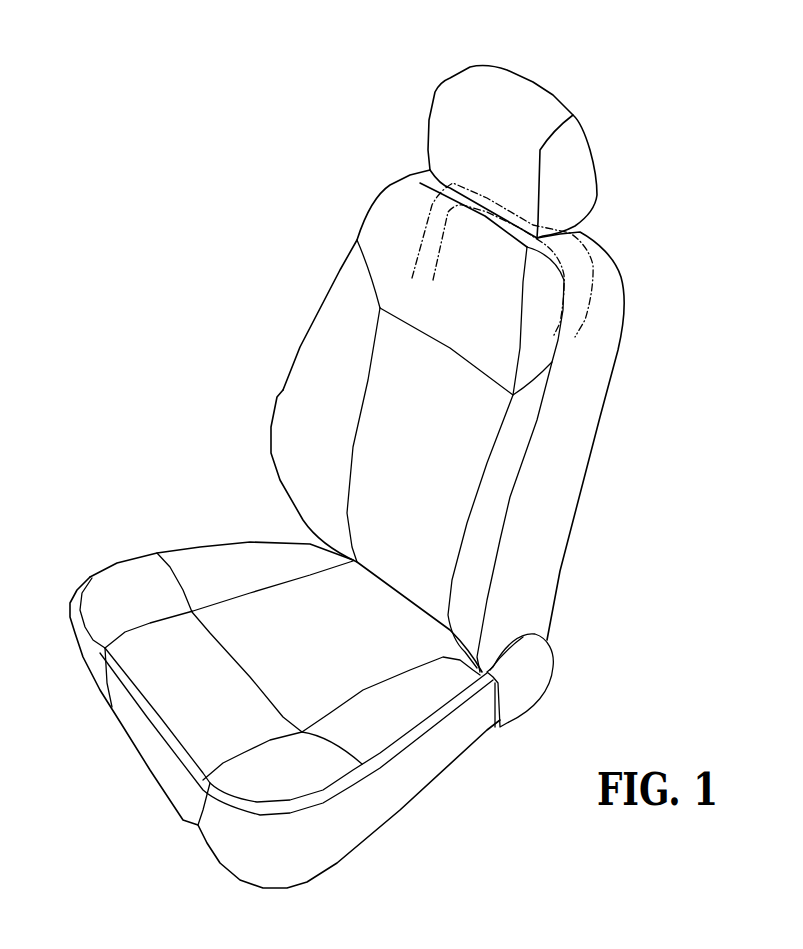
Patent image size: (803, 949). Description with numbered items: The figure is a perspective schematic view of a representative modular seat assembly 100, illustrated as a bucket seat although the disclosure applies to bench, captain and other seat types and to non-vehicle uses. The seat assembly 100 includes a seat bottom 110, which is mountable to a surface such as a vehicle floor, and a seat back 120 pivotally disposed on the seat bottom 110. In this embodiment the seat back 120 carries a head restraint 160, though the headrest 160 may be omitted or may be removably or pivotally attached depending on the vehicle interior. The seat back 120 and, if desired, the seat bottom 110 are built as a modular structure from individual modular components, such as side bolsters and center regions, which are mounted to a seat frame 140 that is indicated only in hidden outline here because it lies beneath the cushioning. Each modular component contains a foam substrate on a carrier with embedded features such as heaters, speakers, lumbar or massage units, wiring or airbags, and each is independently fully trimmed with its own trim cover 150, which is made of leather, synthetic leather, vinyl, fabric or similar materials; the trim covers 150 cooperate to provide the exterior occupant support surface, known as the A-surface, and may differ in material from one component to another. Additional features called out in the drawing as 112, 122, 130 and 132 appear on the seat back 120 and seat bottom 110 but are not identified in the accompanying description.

The seat assembly 100 is at (310, 73).
The seat bottom 110 is at (90, 575).
The seam 112 is at (380, 308).
The seat back 120 is at (340, 270).
The cushion insert panel 122 is at (260, 617).
The central panel 130 is at (427, 417).
The side bolster 132 is at (312, 420).
The seat frame 140 is at (590, 245).
The trim cover 150 is at (462, 317).
The head restraint 160 is at (483, 130).